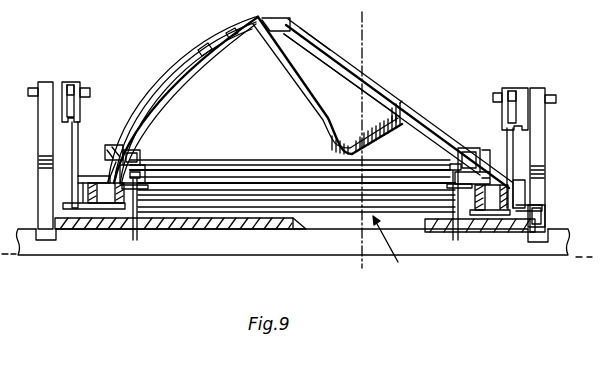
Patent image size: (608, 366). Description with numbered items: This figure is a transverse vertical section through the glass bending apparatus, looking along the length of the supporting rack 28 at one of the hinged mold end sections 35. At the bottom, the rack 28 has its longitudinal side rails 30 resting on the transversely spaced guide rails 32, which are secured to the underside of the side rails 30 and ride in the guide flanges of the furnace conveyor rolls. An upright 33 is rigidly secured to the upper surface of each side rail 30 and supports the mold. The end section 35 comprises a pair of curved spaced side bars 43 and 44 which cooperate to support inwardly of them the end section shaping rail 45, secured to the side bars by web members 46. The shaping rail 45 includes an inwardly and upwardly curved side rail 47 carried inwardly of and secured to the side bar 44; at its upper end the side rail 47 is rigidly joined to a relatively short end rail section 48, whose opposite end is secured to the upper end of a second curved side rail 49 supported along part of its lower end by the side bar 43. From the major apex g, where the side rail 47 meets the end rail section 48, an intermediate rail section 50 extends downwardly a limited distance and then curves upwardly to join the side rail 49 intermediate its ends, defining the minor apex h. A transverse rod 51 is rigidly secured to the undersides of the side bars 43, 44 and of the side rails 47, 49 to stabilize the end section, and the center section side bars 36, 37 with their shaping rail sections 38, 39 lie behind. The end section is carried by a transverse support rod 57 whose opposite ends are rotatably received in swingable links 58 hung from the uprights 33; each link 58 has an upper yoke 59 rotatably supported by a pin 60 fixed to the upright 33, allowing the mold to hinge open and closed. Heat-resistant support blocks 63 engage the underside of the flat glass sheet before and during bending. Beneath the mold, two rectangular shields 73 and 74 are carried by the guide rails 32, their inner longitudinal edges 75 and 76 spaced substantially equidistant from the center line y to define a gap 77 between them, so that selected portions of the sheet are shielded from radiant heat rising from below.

The supporting rack 28 is at (541, 205).
The longitudinal side rail 30 is at (548, 216).
The guide rail 32 is at (524, 246).
The upright 33 is at (46, 95).
The mold end section 35 is at (203, 34).
The curved side bar 36 is at (500, 216).
The curved side bar 37 is at (92, 210).
The shaping rail section 38 is at (479, 213).
The shaping rail section 39 is at (118, 205).
The curved side bar 43 is at (436, 127).
The curved side bar 44 is at (196, 52).
The end section shaping rail 45 is at (320, 44).
The web member 46 is at (174, 84).
The side rail 47 is at (181, 110).
The end rail section 48 is at (282, 26).
The second curved side rail 49 is at (378, 93).
The intermediate rail section 50 is at (306, 93).
The transverse rod 51 is at (250, 160).
The transverse support rod 57 is at (87, 178).
The swingable link 58 is at (79, 135).
The yoke 59 is at (84, 92).
The pin 60 is at (70, 84).
The support block 63 is at (138, 156).
The shield 73 is at (497, 233).
The shield 74 is at (190, 230).
The inner longitudinal edge 75 is at (435, 225).
The inner longitudinal edge 76 is at (304, 223).
The gap 77 is at (396, 255).
The major apex g is at (253, 15).
The minor apex h is at (404, 101).
The center line y is at (370, 143).